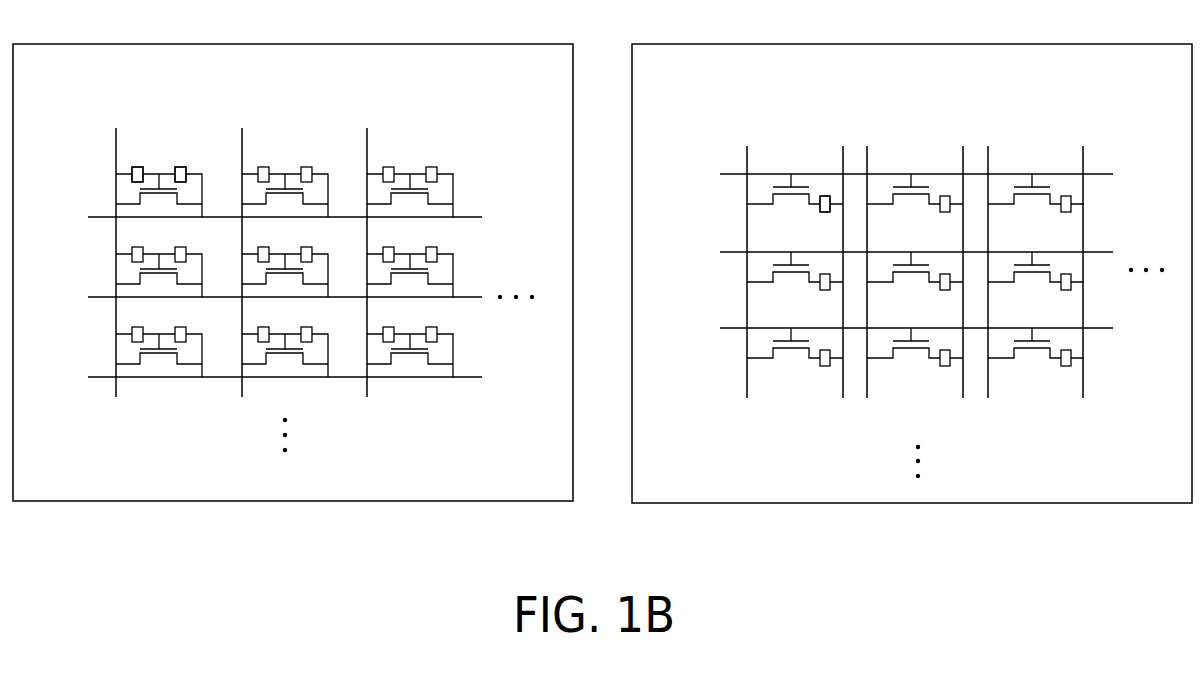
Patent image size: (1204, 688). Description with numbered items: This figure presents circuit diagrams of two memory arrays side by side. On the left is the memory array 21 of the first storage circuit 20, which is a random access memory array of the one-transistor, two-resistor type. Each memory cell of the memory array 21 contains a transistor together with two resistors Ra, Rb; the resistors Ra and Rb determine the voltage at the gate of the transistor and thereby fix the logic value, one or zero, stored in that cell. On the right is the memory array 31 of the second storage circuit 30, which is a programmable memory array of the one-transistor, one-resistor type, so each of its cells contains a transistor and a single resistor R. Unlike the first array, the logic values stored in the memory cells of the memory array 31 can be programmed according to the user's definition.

The first storage circuit 20 is at (493, 43).
The memory array 21 is at (293, 259).
The second storage circuit 30 is at (1112, 43).
The memory array 31 is at (915, 272).
The resistor Ra is at (178, 162).
The resistor Rb is at (136, 162).
The resistor R is at (825, 218).